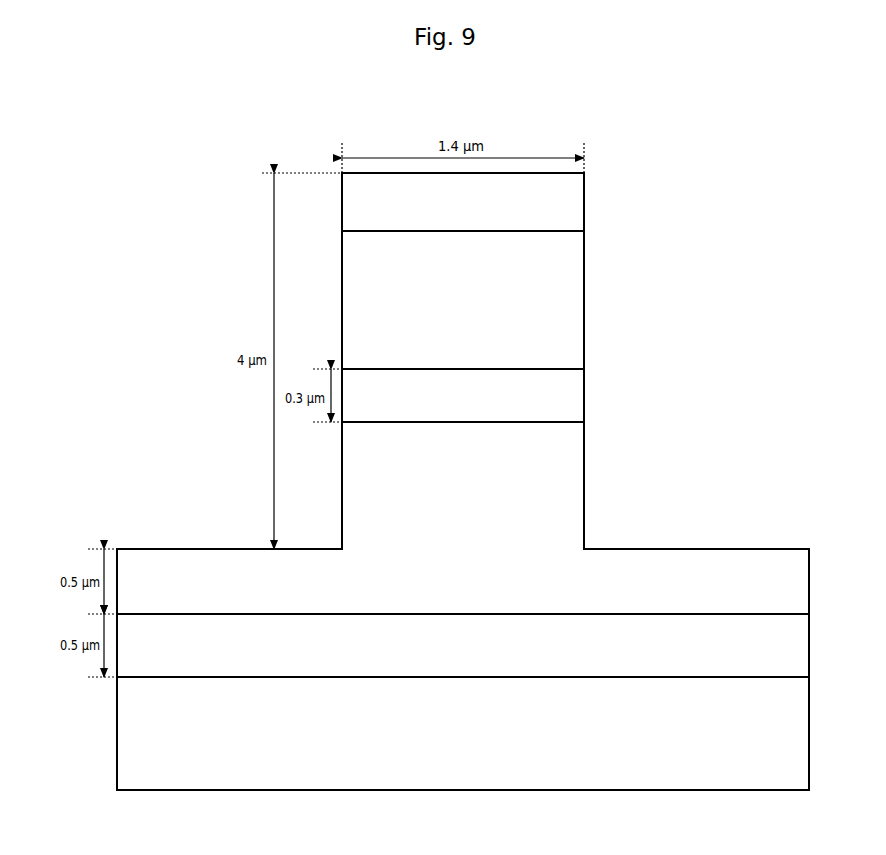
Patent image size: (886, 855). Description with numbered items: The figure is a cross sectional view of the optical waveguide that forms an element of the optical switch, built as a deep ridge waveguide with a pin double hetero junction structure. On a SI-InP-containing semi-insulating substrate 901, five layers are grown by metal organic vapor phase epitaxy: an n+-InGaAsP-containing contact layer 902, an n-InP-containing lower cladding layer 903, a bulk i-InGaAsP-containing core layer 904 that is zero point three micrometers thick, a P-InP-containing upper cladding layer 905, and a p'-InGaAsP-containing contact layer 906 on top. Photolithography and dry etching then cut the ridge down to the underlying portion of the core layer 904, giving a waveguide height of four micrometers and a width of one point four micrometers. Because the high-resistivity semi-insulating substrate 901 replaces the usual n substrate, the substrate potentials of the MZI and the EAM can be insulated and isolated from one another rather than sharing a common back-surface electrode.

The semi-insulating substrate 901 is at (801, 735).
The contact layer 902 is at (801, 650).
The lower cladding layer 903 is at (801, 585).
The core layer 904 is at (579, 403).
The upper cladding layer 905 is at (579, 304).
The contact layer 906 is at (579, 208).